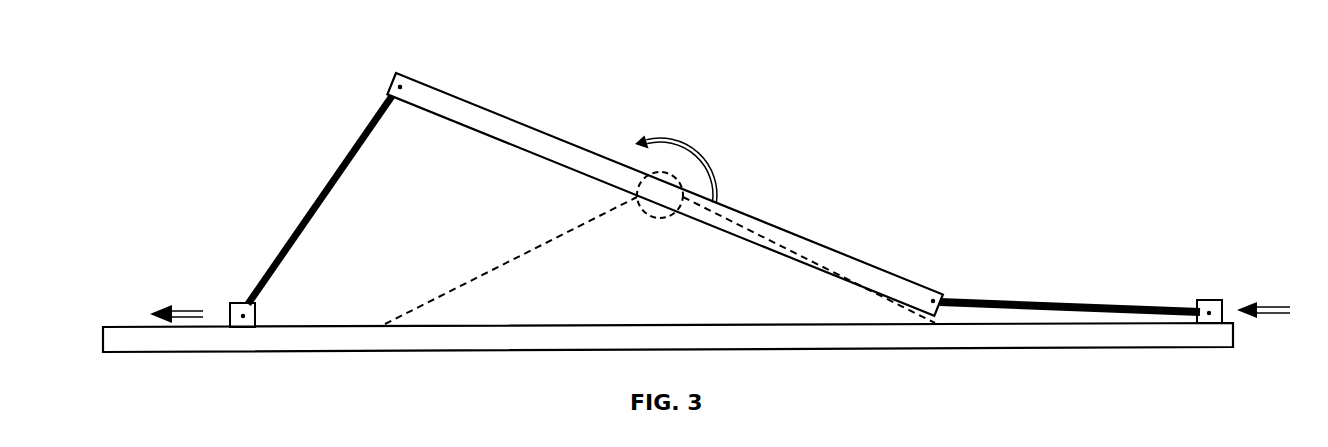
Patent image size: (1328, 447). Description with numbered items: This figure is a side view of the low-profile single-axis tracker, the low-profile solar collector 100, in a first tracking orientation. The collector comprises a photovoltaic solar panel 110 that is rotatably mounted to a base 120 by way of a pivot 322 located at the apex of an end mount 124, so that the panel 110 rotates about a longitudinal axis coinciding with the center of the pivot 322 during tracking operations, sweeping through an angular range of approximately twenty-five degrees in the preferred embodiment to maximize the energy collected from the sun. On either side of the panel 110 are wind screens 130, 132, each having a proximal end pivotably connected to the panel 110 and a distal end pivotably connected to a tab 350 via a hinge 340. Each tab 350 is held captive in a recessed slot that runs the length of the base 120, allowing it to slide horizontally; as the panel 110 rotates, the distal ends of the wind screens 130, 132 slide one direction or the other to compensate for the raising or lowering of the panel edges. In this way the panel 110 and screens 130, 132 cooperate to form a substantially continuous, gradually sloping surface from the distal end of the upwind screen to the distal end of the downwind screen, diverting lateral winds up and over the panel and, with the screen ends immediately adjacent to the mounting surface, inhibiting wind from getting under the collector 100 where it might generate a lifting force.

The low-profile solar collector 100 is at (975, 125).
The photovoltaic solar panel 110 is at (585, 145).
The base 120 is at (332, 352).
The end mount 124 is at (530, 252).
The wind screen 130 is at (313, 202).
The wind screen 132 is at (1093, 307).
The pivot 322 is at (665, 165).
The hinge 340 is at (401, 85).
The tab 350 is at (232, 302).